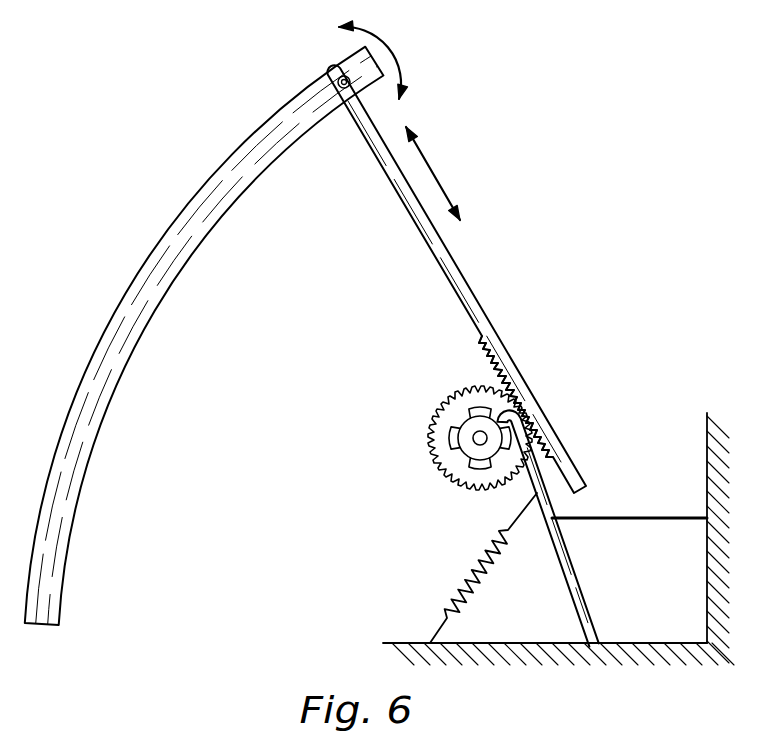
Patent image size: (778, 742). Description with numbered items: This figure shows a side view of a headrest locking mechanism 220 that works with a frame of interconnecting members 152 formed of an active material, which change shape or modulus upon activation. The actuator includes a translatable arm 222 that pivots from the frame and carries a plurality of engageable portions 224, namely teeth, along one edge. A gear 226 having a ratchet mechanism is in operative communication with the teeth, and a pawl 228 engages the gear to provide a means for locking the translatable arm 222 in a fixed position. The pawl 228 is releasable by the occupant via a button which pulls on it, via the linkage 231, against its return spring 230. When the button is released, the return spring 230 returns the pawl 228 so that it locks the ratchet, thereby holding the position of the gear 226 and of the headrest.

The interconnecting members 152 is at (145, 258).
The locking mechanism 220 is at (603, 147).
The translatable arm 222 is at (457, 265).
The engageable portions 224 is at (533, 402).
The gear 226 is at (425, 440).
The pawl 228 is at (578, 580).
The return spring 230 is at (470, 572).
The button linkage 231 is at (628, 517).